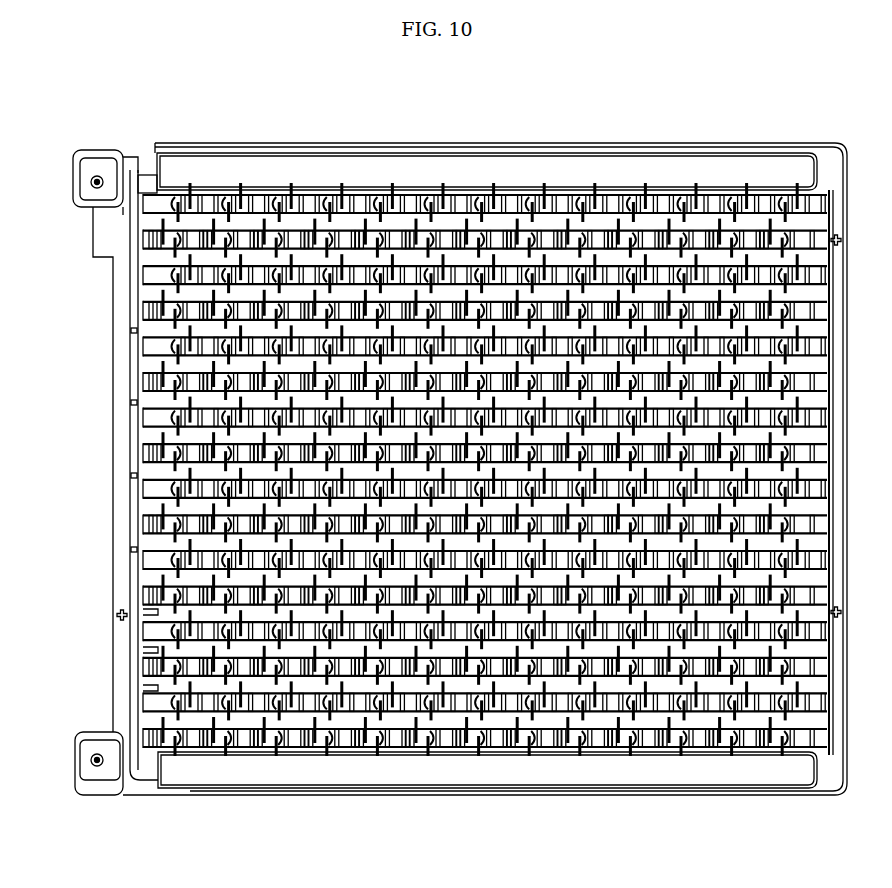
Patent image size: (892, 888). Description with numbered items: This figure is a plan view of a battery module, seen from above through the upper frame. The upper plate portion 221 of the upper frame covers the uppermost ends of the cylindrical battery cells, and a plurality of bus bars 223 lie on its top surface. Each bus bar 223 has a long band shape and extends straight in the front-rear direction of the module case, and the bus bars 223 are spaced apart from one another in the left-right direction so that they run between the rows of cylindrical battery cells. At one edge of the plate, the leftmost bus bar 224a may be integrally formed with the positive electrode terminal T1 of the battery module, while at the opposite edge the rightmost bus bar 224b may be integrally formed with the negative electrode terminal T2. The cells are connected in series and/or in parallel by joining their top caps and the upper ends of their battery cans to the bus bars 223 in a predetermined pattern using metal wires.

The rightmost bus bar 224b is at (306, 175).
The leftmost bus bar 224a is at (304, 776).
The negative electrode terminal T2 is at (91, 183).
The positive electrode terminal T1 is at (91, 761).
The upper plate portion 221 is at (127, 556).
The bus bar 223 is at (155, 612).